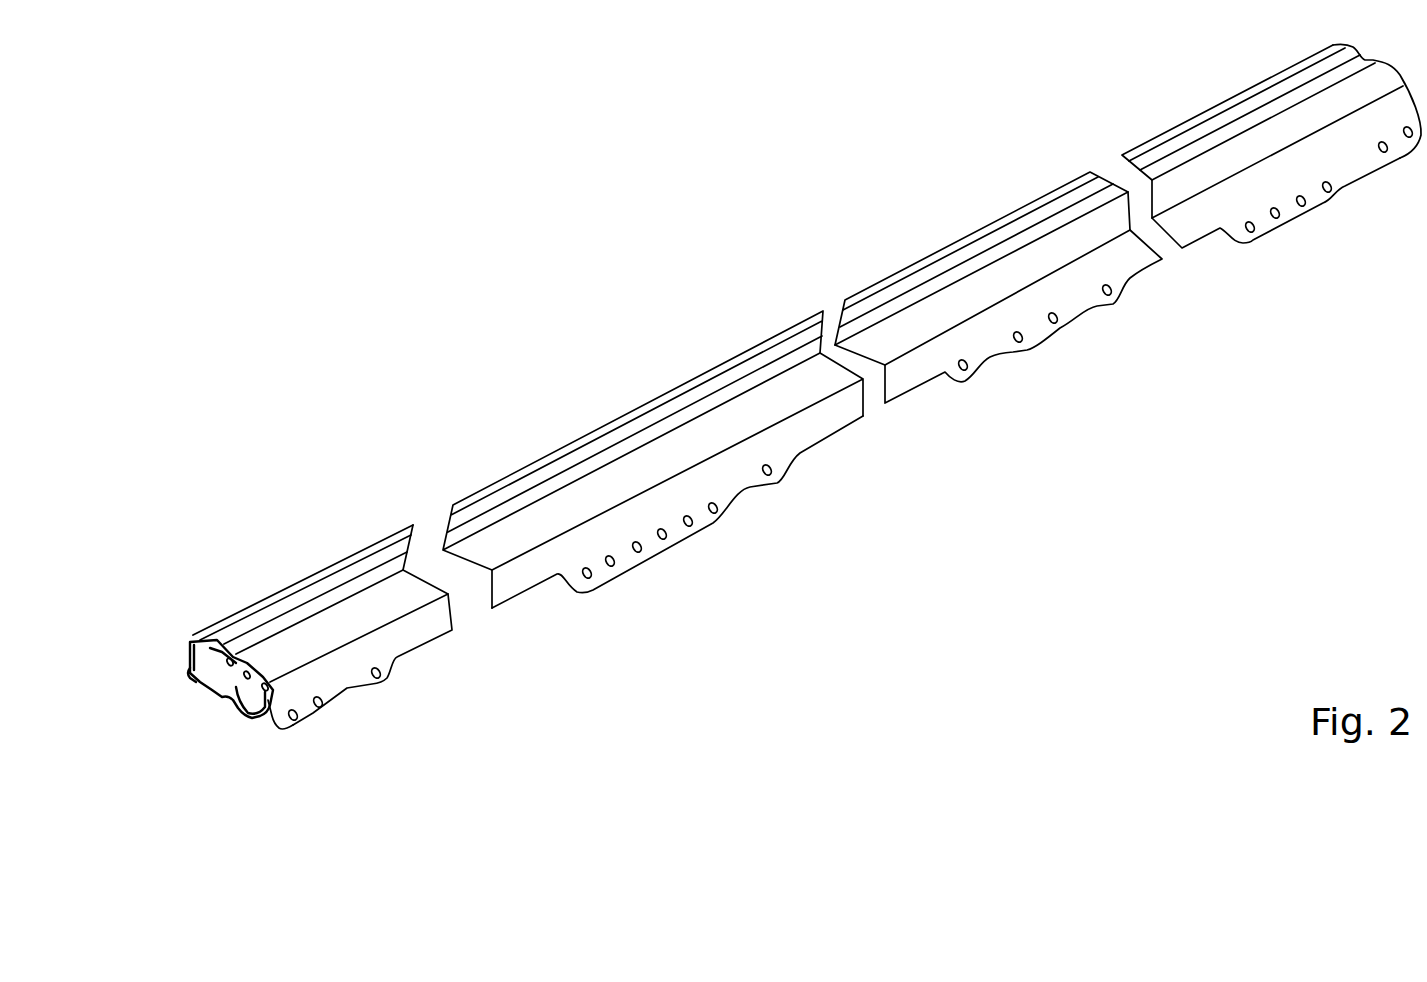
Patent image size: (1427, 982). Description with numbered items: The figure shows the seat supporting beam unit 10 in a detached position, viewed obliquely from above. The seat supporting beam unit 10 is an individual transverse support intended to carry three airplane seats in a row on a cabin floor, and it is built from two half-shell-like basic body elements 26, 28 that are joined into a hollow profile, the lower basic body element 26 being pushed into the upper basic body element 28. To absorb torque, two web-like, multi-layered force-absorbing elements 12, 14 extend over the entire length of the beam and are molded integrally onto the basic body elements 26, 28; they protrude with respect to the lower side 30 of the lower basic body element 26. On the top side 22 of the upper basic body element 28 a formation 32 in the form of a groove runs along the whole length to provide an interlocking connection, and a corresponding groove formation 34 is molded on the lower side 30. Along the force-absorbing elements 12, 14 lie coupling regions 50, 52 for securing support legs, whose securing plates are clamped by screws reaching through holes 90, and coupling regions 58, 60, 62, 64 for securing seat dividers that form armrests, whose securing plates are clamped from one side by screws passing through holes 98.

The seat supporting beam unit 10 is at (586, 410).
The force-absorbing element 12 is at (184, 686).
The force-absorbing element 14 is at (294, 743).
The top side 22 is at (333, 560).
The basic body element 26 is at (266, 729).
The basic body element 28 is at (243, 612).
The lower side 30 is at (210, 695).
The formation 32 is at (400, 553).
The formation 34 is at (237, 707).
The coupling region 50 is at (602, 573).
The coupling region 52 is at (1290, 203).
The coupling region 58 is at (347, 682).
The coupling region 60 is at (737, 487).
The coupling region 62 is at (998, 343).
The coupling region 64 is at (1398, 135).
The holes 90 is at (665, 533).
The holes 98 is at (386, 650).